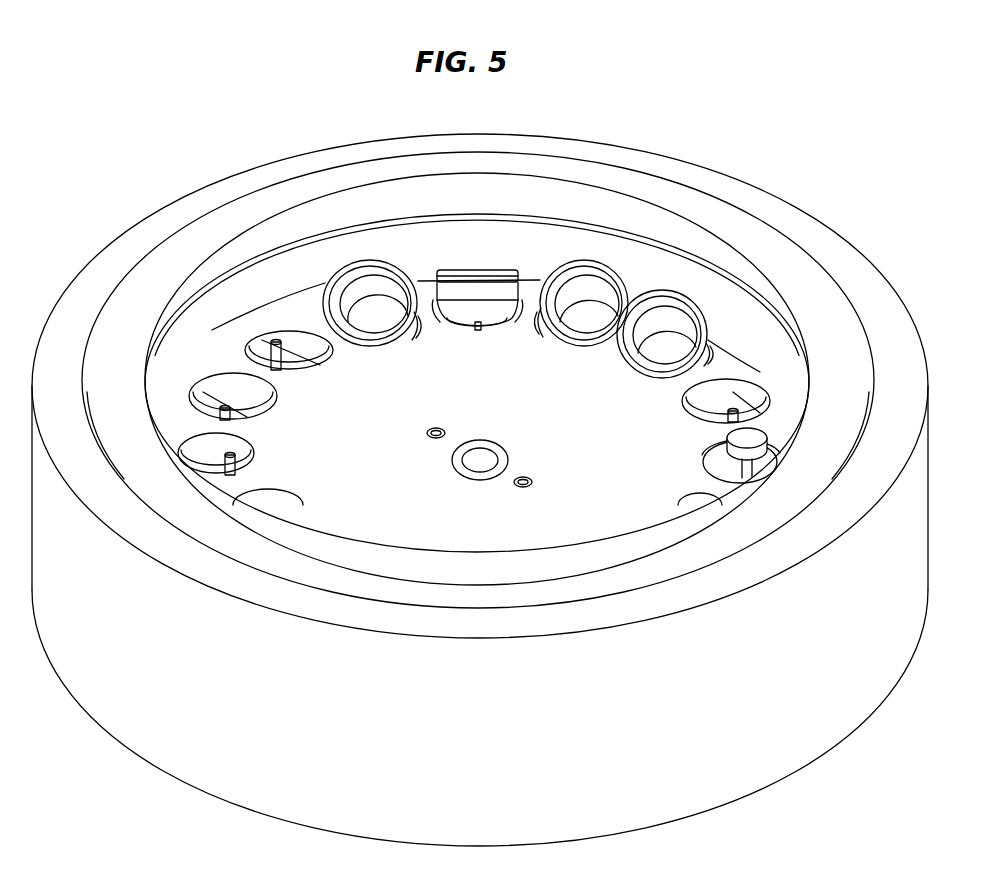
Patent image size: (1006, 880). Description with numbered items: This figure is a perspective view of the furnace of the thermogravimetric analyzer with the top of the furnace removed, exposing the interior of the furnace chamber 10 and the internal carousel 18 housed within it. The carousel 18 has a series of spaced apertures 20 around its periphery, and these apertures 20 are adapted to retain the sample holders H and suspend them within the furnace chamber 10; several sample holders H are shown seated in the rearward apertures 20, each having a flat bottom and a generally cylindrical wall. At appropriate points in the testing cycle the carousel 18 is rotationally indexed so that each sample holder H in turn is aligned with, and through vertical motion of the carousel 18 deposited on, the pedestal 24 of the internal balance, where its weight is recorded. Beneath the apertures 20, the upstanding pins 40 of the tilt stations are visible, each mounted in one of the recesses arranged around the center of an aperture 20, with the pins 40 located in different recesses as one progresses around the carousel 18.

The furnace chamber 10 is at (802, 211).
The carousel 18 is at (593, 440).
The apertures 20 is at (307, 353).
The pedestal 24 is at (762, 436).
The pin 40 is at (276, 371).
The sample holder H is at (365, 272).